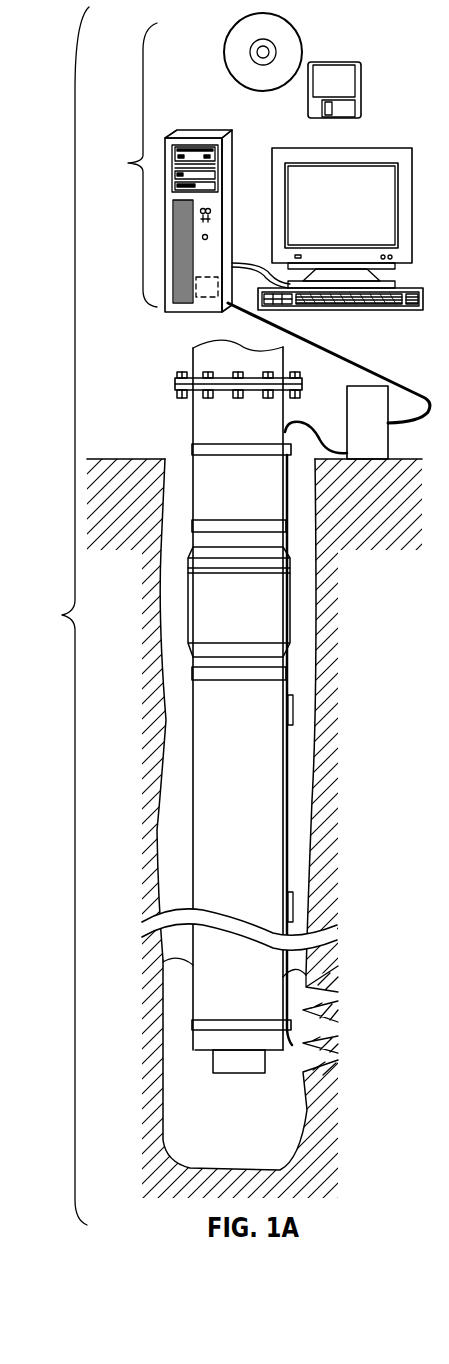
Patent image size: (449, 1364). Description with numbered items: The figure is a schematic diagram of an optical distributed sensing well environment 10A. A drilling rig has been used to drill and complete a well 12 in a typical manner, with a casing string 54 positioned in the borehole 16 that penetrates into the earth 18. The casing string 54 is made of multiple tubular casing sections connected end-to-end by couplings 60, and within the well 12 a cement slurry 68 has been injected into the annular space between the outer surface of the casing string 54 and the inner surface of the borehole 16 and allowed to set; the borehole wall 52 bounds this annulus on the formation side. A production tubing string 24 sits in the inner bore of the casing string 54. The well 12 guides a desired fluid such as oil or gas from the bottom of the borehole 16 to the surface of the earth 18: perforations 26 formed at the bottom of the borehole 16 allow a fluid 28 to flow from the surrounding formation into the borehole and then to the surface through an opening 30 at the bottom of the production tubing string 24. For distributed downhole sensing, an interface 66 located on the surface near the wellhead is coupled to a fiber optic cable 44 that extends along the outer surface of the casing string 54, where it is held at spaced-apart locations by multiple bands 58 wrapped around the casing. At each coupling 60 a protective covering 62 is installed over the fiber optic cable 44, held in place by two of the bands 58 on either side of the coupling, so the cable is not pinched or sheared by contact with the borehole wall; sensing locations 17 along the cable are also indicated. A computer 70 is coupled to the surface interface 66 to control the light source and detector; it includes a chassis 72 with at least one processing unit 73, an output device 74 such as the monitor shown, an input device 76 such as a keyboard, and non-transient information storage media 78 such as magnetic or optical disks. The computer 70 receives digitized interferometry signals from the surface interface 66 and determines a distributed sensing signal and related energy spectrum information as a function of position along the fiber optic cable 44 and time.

The optical distributed sensing well environment 10A is at (50, 616).
The well 12 is at (141, 380).
The borehole 16 is at (178, 455).
The sensors 17 is at (293, 713).
The earth 18 is at (127, 492).
The production tubing string 24 is at (225, 1067).
The perforations 26 is at (349, 973).
The fluid 28 is at (303, 1057).
The opening 30 is at (234, 1084).
The fiber optic cable 44 is at (307, 423).
The wellbore wall 52 is at (317, 553).
The casing string 54 is at (193, 433).
The bands 58 is at (223, 444).
The couplings 60 is at (270, 622).
The protective covering 62 is at (290, 597).
The interface 66 is at (389, 449).
The cement slurry 68 is at (305, 783).
The computer 70 is at (127, 165).
The chassis 72 is at (232, 160).
The processing unit 73 is at (205, 298).
The output device 74 is at (412, 215).
The input device 76 is at (408, 288).
The non-transient information storage media 78 is at (320, 62).